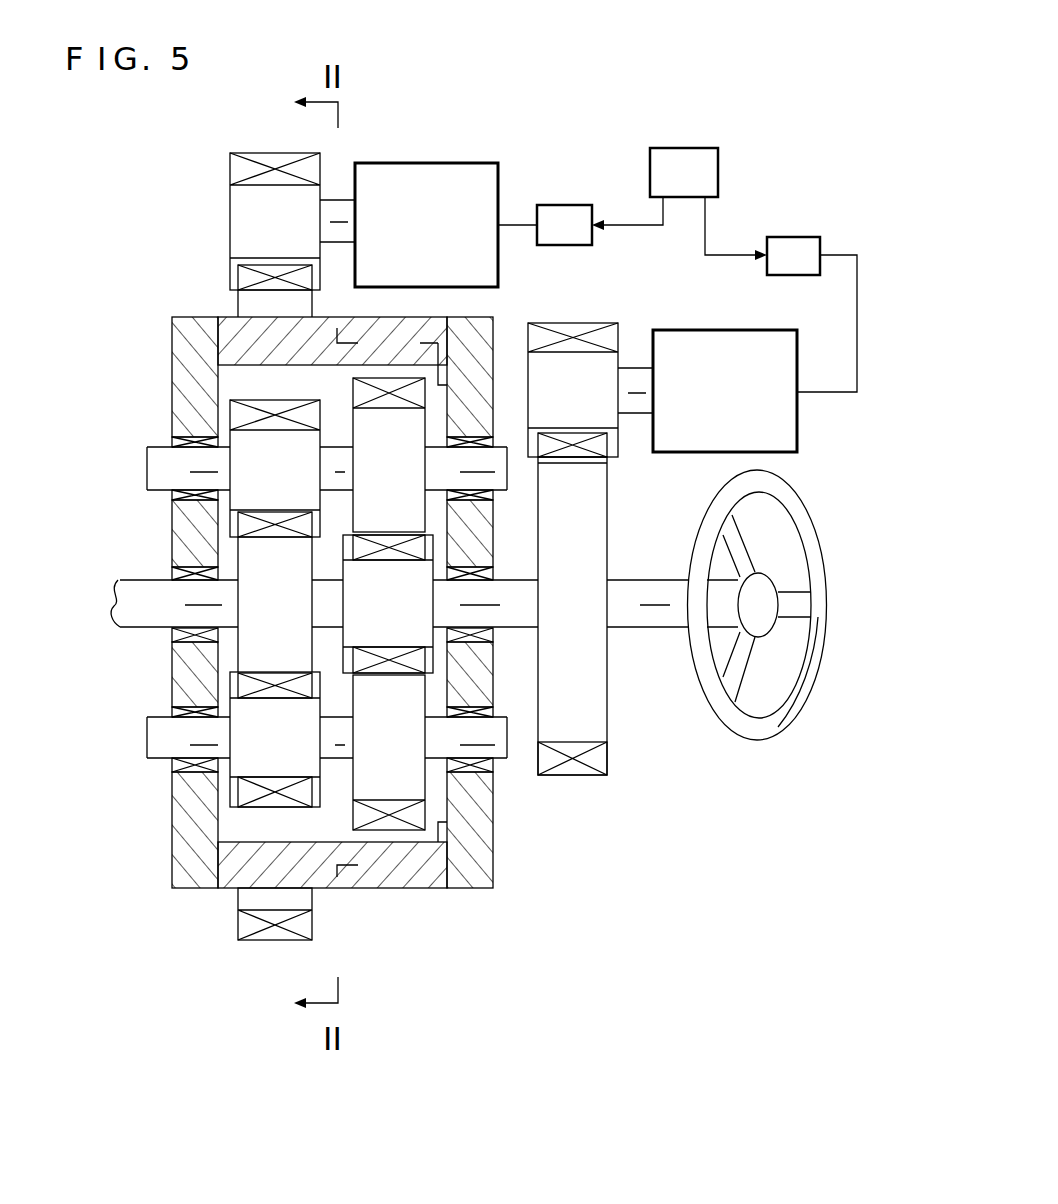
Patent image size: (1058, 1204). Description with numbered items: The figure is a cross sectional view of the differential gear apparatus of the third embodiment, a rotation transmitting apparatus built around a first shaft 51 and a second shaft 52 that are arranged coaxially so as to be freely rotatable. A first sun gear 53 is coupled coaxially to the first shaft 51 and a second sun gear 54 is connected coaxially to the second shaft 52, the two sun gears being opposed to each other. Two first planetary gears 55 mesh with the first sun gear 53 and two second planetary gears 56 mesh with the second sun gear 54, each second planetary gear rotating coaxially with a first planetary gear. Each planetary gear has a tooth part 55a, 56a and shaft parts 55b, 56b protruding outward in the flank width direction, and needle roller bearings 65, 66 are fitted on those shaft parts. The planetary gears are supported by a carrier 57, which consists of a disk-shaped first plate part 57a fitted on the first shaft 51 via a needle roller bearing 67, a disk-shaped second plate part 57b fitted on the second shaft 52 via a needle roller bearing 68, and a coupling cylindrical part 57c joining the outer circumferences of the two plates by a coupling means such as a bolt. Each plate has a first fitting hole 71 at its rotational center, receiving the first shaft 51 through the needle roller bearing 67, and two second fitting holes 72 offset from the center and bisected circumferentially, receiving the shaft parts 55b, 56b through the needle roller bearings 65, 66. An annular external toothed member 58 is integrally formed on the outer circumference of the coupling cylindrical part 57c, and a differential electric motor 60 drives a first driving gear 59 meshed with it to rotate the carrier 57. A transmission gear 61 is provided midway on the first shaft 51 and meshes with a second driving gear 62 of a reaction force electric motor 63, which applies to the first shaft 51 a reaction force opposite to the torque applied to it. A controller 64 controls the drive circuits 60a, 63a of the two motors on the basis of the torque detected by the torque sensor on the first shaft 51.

The first shaft 51 is at (676, 632).
The second shaft 52 is at (142, 583).
The first sun gear 53 is at (430, 632).
The second sun gear 54 is at (238, 648).
The first planetary gear 55 is at (319, 636).
The tooth part 55a is at (423, 397).
The shaft part 55b is at (503, 465).
The second planetary gear 56 is at (199, 677).
The tooth part 56a is at (237, 412).
The shaft part 56b is at (148, 470).
The carrier 57 is at (328, 643).
The first plate part 57a is at (490, 845).
The second plate part 57b is at (172, 822).
The coupling cylindrical part 57c is at (437, 885).
The external toothed member 58 is at (273, 940).
The first driving gear 59 is at (230, 165).
The differential electric motor 60 is at (430, 163).
The drive circuit 60a is at (563, 205).
The transmission gear 61 is at (597, 493).
The second driving gear 62 is at (570, 325).
The reaction force electric motor 63 is at (797, 423).
The drive circuit 63a is at (790, 237).
The controller 64 is at (688, 150).
The needle roller bearing 65 is at (495, 487).
The needle roller bearing 66 is at (195, 436).
The needle roller bearing 67 is at (500, 637).
The needle roller bearing 68 is at (240, 645).
The first fitting hole 71 is at (393, 602).
The second fitting hole 72 is at (192, 452).